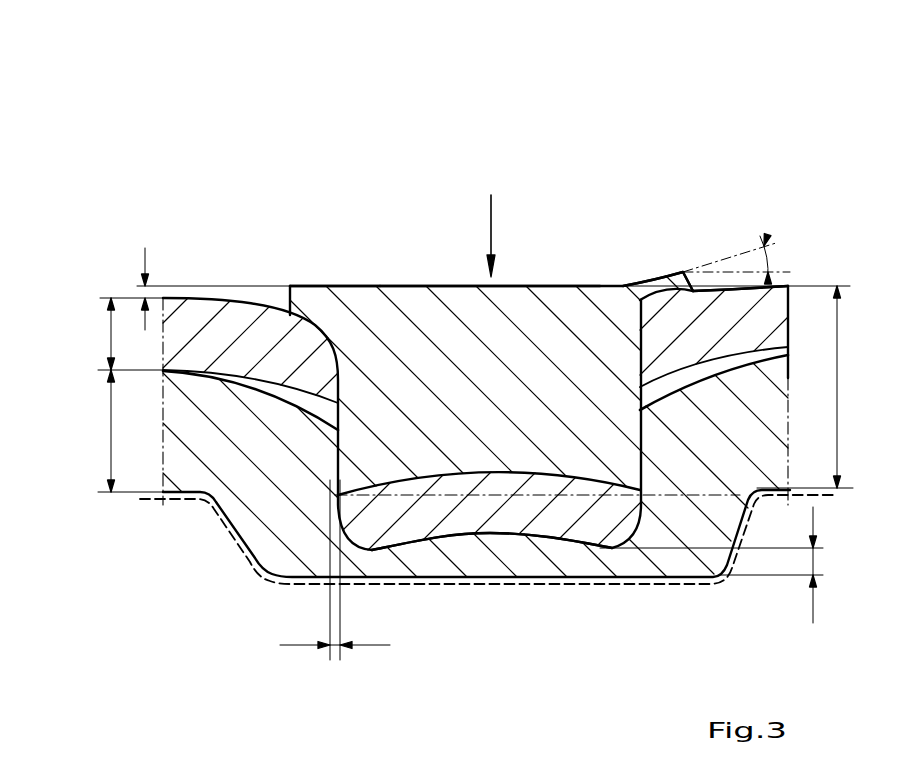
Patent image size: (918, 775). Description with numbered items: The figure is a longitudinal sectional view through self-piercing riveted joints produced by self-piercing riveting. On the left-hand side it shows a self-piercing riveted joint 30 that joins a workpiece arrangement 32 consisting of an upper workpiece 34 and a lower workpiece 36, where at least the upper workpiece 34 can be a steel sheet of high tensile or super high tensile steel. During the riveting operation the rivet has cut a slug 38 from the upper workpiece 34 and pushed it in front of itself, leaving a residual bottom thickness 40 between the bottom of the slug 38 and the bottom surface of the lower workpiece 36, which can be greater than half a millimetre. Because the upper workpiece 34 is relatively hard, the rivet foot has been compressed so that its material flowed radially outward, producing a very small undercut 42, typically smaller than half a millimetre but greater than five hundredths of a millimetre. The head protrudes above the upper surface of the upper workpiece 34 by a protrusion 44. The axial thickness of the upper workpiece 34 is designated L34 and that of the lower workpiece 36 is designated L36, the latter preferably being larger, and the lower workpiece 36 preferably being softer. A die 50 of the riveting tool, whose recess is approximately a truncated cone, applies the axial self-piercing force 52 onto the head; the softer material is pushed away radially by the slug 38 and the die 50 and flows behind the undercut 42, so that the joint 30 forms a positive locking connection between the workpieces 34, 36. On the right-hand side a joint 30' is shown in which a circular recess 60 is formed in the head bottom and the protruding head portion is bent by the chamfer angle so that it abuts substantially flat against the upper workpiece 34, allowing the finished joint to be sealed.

The self-piercing riveted joint 30 is at (451, 259).
The upper workpiece 34 is at (232, 298).
The protrusion 44 is at (143, 295).
The axial thickness of the upper workpiece L34 is at (111, 332).
The workpiece arrangement 32 is at (84, 379).
The axial thickness of the lower workpiece L36 is at (112, 425).
The axial force 52 is at (492, 227).
The circular recess 60 is at (657, 280).
The self-piercing riveted joint 30' is at (777, 171).
The die 50 is at (223, 525).
The lower workpiece 36 is at (251, 558).
The undercut 42 is at (340, 658).
The slug 38 is at (522, 518).
The residual bottom thickness 40 is at (817, 560).